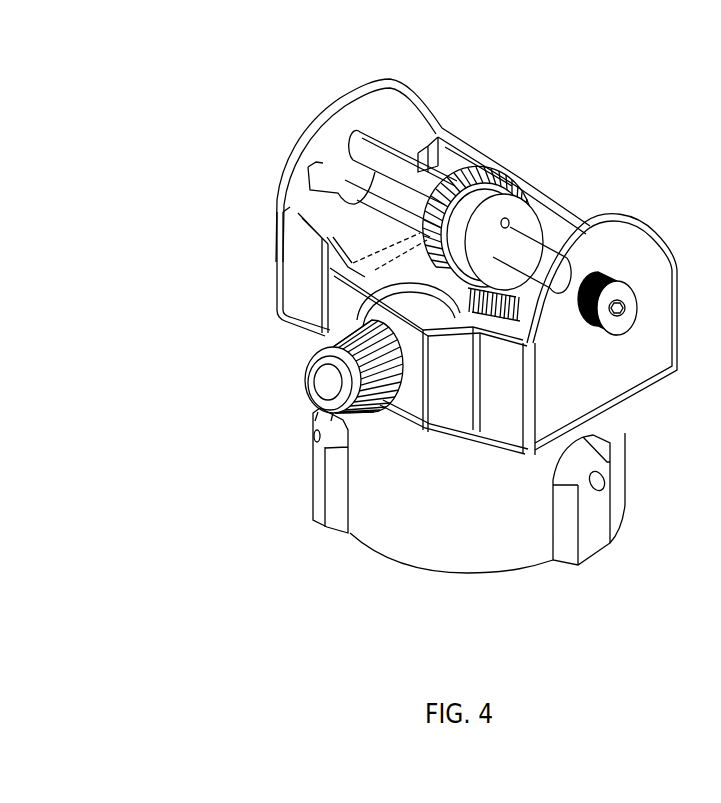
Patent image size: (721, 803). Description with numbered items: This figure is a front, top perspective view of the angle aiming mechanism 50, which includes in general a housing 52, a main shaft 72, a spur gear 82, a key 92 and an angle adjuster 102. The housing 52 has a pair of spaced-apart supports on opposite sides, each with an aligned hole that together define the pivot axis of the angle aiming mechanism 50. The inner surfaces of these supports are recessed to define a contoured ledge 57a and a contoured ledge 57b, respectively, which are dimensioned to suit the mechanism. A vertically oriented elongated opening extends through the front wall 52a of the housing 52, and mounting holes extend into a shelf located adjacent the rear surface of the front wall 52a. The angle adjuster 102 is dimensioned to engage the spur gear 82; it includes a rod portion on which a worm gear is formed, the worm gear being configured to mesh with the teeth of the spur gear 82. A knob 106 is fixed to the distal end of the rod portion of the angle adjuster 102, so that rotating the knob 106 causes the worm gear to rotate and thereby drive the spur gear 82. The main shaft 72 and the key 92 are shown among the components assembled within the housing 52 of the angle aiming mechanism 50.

The angle aiming mechanism 50 is at (195, 322).
The housing 52 is at (410, 528).
The front wall 52a is at (330, 300).
The contoured ledge 57a is at (337, 190).
The contoured ledge 57b is at (530, 303).
The main shaft 72 is at (385, 183).
The spur gear 82 is at (423, 235).
The key 92 is at (375, 152).
The angle adjuster 102 is at (310, 387).
The knob 106 is at (320, 352).